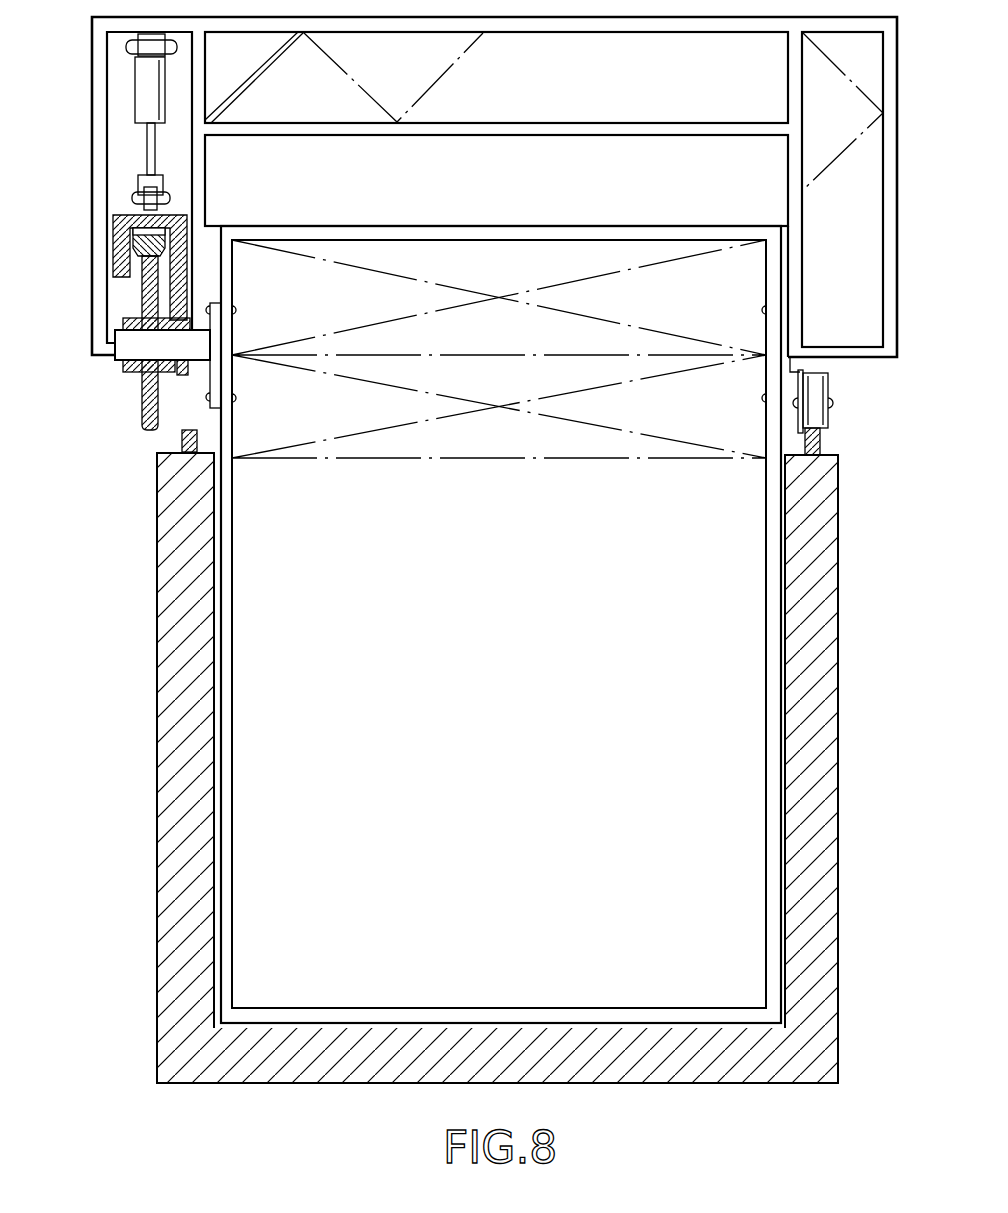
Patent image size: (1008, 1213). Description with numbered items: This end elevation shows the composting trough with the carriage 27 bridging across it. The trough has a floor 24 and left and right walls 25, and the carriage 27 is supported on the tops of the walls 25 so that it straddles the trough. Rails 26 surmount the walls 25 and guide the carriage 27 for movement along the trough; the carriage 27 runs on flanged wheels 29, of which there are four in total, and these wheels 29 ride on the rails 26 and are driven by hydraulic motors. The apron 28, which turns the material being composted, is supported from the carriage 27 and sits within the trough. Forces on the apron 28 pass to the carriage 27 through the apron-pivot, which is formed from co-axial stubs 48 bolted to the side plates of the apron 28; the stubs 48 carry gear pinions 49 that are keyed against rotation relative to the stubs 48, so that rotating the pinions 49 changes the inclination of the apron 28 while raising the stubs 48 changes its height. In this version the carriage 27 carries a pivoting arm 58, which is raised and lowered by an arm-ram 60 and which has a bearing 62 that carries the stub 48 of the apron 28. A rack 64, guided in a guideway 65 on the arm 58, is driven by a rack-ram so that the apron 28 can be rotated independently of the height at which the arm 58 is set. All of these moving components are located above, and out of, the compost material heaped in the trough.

The floor 24 is at (393, 1027).
The walls 25 is at (173, 527).
The rails 26 is at (821, 442).
The carriage 27 is at (340, 137).
The apron 28 is at (515, 725).
The flanged wheels 29 is at (815, 390).
The stubs 48 is at (113, 358).
The gear pinions 49 is at (142, 408).
The arm 58 is at (152, 227).
The arm-ram 60 is at (153, 107).
The bearing 62 is at (193, 373).
The rack 64 is at (163, 238).
The guideway 65 is at (174, 210).